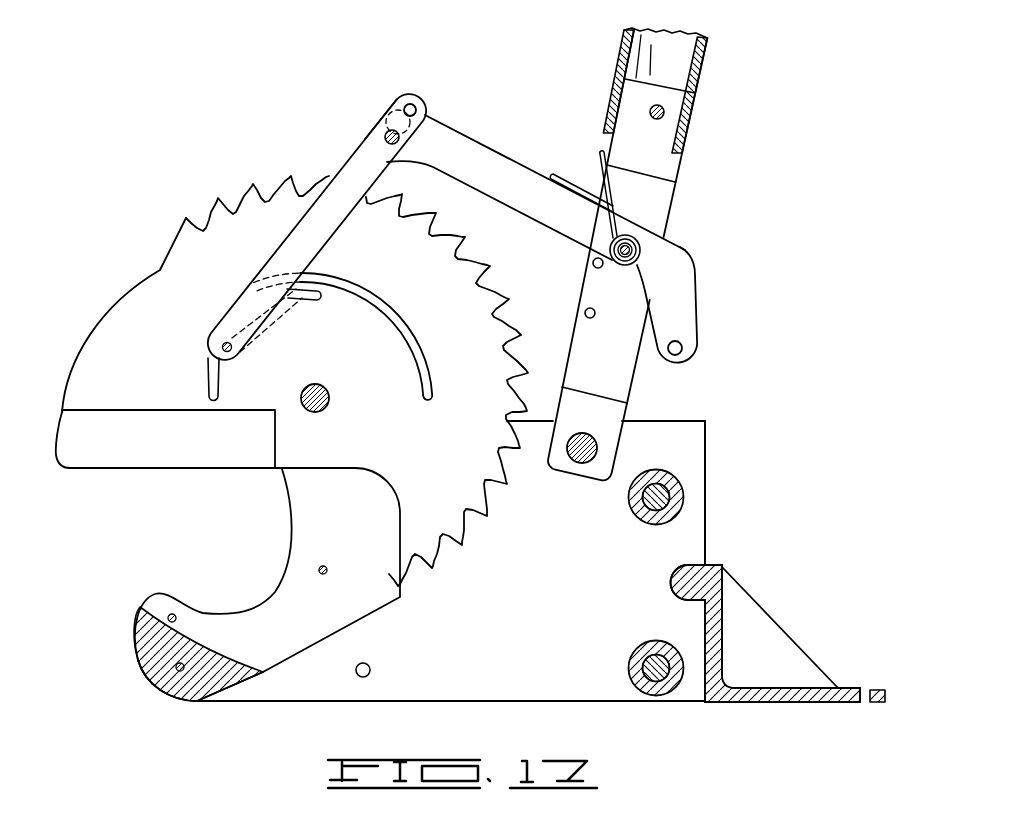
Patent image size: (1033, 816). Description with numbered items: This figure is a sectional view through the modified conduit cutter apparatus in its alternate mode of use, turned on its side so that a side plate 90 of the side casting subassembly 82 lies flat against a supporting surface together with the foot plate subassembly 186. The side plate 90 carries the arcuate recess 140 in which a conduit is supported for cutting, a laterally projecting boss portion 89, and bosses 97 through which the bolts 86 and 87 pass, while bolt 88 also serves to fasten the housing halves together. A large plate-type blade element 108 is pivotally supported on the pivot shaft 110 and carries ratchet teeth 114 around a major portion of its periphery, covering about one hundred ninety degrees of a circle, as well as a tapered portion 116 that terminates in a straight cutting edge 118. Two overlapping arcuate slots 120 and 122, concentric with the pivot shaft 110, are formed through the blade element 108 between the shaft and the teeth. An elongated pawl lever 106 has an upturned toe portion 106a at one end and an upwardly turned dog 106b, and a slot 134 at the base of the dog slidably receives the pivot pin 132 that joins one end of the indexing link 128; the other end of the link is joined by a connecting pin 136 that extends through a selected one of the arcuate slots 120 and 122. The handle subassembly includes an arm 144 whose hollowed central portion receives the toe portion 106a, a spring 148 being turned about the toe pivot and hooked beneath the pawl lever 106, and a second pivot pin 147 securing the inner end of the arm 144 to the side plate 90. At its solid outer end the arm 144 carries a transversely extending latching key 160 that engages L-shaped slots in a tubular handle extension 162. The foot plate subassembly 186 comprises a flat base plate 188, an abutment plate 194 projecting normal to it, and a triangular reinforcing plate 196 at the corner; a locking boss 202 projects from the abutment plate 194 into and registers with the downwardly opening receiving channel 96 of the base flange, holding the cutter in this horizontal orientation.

The side casting subassembly 82 is at (690, 443).
The bolt 86 is at (683, 494).
The bolt 87 is at (658, 700).
The bolt 88 is at (176, 667).
The laterally projecting boss portion 89 is at (205, 698).
The side plate 90 is at (519, 601).
The receiving channel 96 is at (668, 588).
The boss 97 is at (628, 505).
The pawl lever 106 is at (519, 193).
The upturned toe portion 106a is at (693, 292).
The upwardly turned dog 106b is at (372, 130).
The blade element 108 is at (158, 300).
The pivot shaft 110 is at (330, 398).
The ratchet teeth 114 is at (497, 282).
The tapered portion 116 is at (176, 448).
The straight cutting edge 118 is at (140, 470).
The arcuate slot 120 is at (208, 380).
The arcuate slot 122 is at (404, 310).
The indexing link 128 is at (300, 243).
The pivot pin 132 is at (399, 141).
The slot 134 is at (385, 100).
The connecting pin 136 is at (237, 347).
The arcuate recess 140 is at (265, 597).
The arm 144 is at (612, 360).
The second pivot pin 147 is at (580, 466).
The spring 148 is at (557, 177).
The latching key 160 is at (655, 116).
The handle extension 162 is at (716, 66).
The foot plate subassembly 186 is at (826, 660).
The base plate 188 is at (765, 705).
The abutment plate 194 is at (718, 640).
The triangular reinforcing plate 196 is at (770, 622).
The locking boss 202 is at (718, 565).